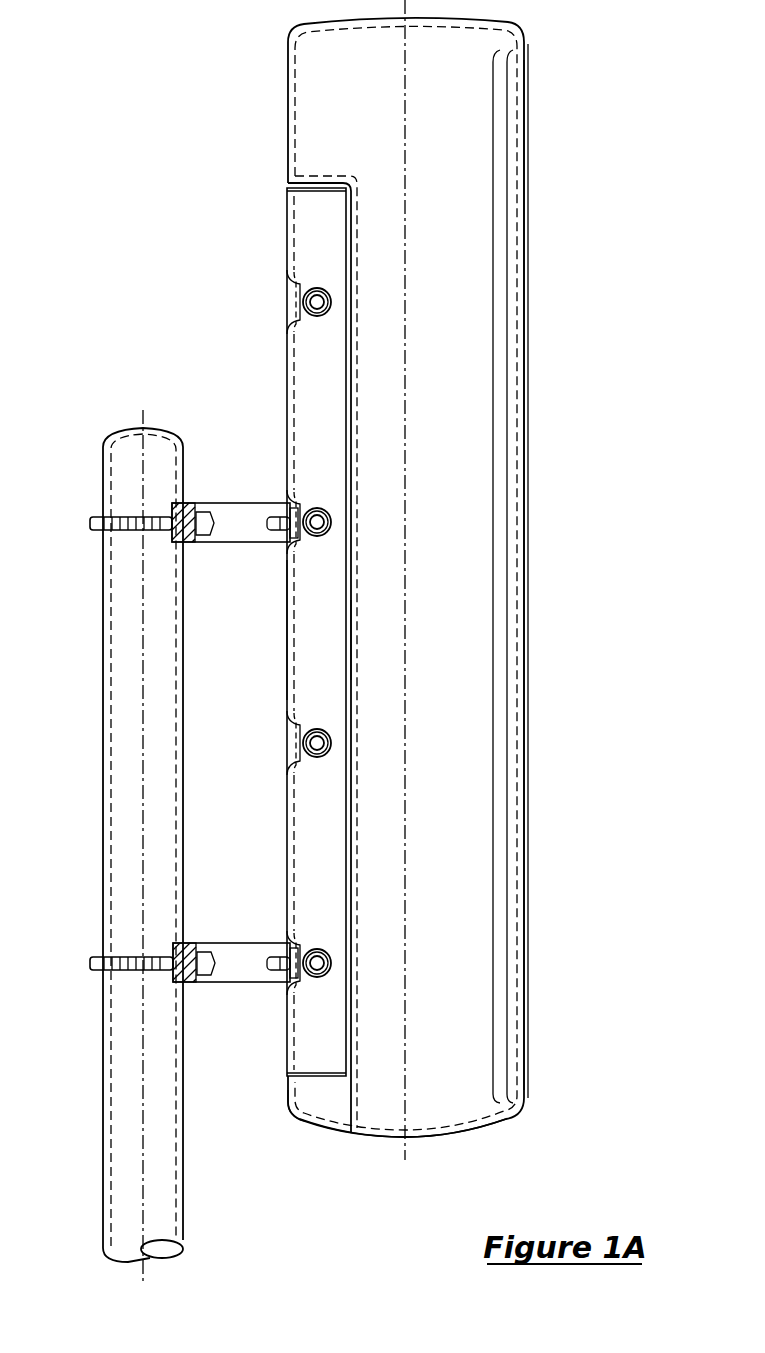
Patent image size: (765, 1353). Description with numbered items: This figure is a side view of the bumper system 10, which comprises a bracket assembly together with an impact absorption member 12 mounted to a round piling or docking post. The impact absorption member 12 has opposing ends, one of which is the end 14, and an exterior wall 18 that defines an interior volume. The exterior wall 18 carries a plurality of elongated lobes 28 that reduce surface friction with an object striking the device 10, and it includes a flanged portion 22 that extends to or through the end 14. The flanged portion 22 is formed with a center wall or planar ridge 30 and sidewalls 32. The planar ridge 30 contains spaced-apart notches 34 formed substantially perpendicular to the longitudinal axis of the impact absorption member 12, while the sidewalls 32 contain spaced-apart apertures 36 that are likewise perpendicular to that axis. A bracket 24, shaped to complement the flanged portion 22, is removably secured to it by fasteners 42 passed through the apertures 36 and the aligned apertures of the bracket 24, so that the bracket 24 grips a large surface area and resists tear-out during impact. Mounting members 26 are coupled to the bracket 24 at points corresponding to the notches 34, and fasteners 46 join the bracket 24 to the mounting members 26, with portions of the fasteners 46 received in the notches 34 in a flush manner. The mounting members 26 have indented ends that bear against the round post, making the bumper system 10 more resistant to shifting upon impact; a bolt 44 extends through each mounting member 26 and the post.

The bumper system 10 is at (540, 556).
The impact absorption member 12 is at (458, 1102).
The opposing end 14 is at (377, 1138).
The exterior wall 18 is at (436, 213).
The flanged portion 22 is at (321, 1108).
The bracket 24 is at (316, 370).
The mounting member 26 is at (235, 518).
The elongated lobes 28 is at (528, 745).
The planar ridge 30 is at (293, 598).
The sidewalls 32 is at (307, 650).
The notches 34 is at (296, 294).
The apertures 36 is at (320, 508).
The fasteners 42 is at (288, 955).
The bolt 44 is at (90, 518).
The fasteners 46 is at (277, 975).